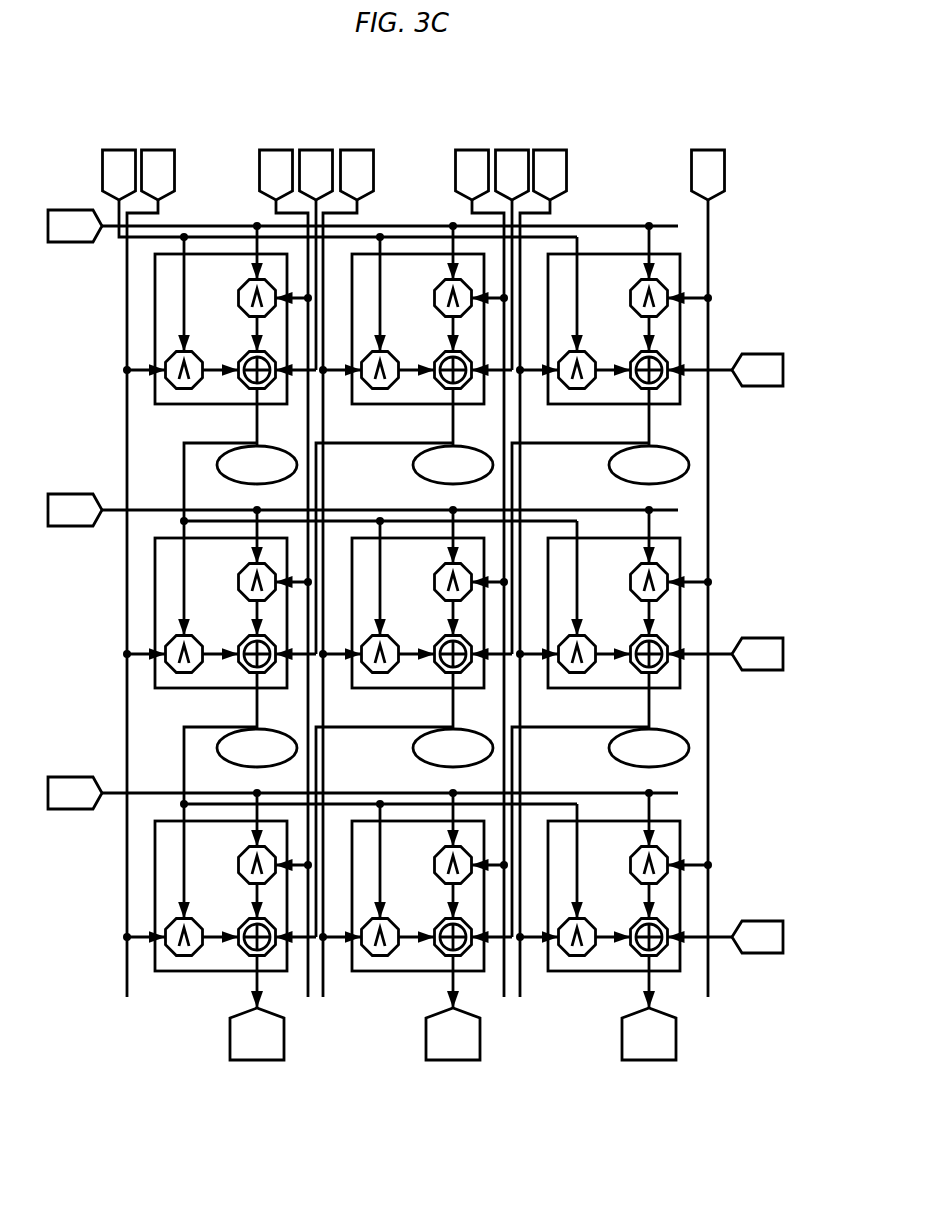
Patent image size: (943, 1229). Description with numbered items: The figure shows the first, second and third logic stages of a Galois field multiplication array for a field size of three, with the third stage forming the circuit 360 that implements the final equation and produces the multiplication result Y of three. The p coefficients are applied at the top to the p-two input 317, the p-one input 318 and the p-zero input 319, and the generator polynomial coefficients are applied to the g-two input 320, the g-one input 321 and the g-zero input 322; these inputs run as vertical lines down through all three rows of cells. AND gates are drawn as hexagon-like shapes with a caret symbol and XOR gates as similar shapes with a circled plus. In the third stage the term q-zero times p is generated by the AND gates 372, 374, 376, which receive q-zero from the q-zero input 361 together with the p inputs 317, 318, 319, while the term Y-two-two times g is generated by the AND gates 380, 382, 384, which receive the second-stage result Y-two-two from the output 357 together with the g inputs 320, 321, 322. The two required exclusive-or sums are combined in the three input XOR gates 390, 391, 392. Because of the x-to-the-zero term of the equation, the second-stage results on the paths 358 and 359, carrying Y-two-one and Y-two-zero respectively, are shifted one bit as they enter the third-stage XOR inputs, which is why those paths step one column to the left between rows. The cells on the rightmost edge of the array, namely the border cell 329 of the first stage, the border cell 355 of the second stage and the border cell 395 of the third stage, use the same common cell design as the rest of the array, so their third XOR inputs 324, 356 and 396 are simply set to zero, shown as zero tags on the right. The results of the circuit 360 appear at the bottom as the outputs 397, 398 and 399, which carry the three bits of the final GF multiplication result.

The p2 input 317 is at (276, 148).
The p1 input 318 is at (472, 148).
The p0 input 319 is at (710, 148).
The g2 input 320 is at (157, 148).
The g1 input 321 is at (357, 148).
The g0 input 322 is at (550, 148).
The third XOR input 324 is at (758, 353).
The border cell 329 is at (588, 254).
The border cell 355 is at (588, 538).
The third XOR input 356 is at (758, 637).
The Y(2)2 output 357 is at (222, 738).
The Y(2)1 path 358 is at (372, 727).
The Y(2)0 path 359 is at (543, 727).
The circuit 360 is at (738, 115).
The q0 input 361 is at (80, 810).
The AND gate 372 is at (240, 856).
The AND gate 374 is at (436, 856).
The AND gate 376 is at (632, 856).
The AND gate 380 is at (180, 955).
The AND gate 382 is at (376, 955).
The AND gate 384 is at (572, 955).
The three input XOR gate 390 is at (245, 953).
The three input XOR gate 391 is at (441, 953).
The three input XOR gate 392 is at (637, 953).
The border cell 395 is at (590, 821).
The third XOR input 396 is at (760, 919).
The Y(3)2 output 397 is at (231, 1040).
The Y(3)1 output 398 is at (427, 1040).
The Y(3)0 output 399 is at (623, 1040).